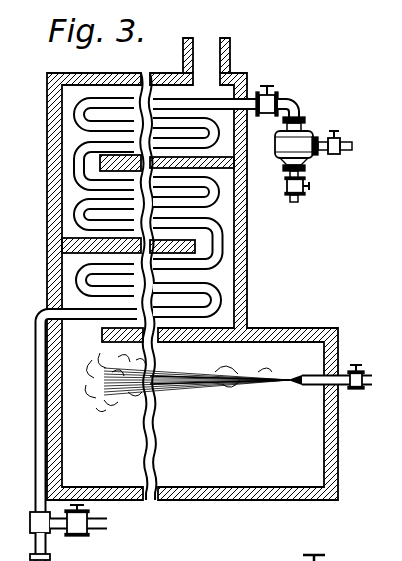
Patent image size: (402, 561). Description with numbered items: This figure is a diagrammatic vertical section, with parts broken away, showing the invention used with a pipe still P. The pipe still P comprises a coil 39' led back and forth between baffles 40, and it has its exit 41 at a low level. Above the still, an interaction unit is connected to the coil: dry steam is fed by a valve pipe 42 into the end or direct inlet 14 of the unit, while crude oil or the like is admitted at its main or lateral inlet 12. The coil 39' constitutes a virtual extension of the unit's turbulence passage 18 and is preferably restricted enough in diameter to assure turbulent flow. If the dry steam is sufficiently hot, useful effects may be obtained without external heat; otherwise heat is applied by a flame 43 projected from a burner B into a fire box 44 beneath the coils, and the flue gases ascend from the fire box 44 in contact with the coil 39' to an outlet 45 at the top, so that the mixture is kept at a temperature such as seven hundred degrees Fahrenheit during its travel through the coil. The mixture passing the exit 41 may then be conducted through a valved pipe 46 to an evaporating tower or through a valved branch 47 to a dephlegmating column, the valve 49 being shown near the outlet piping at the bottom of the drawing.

The outlet 45 is at (213, 60).
The turbulence passage 18 is at (294, 118).
The inlet opening 12 is at (320, 138).
The inlet opening 14 is at (289, 174).
The valve pipe 42 is at (304, 179).
The pipe still P is at (248, 225).
The baffles 40 is at (195, 248).
The coil 39' is at (227, 293).
The exit 41 is at (41, 309).
The flame 43 is at (128, 392).
The fire box 44 is at (221, 437).
The burner B is at (372, 378).
The valved branch 47 is at (63, 536).
The valved pipe 46 is at (47, 548).
The valve 49 is at (292, 560).